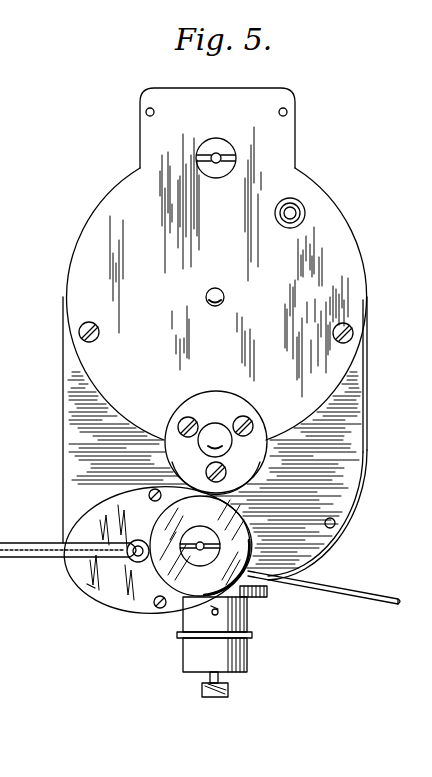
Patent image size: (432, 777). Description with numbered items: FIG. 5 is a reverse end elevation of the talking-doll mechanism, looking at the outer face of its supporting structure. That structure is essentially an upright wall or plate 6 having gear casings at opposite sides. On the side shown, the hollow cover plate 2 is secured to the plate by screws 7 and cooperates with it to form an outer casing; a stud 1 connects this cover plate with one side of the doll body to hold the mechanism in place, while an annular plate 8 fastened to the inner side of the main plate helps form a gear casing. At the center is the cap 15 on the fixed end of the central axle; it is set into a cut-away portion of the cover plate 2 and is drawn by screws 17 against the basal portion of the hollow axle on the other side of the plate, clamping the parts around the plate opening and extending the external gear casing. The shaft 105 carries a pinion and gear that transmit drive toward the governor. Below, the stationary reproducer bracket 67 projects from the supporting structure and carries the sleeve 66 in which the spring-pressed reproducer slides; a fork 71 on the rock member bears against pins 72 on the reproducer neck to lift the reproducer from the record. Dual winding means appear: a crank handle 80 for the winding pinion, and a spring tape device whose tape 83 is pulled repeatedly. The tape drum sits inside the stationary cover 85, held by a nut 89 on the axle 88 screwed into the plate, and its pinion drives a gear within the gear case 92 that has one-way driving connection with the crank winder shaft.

The stud 1 is at (302, 205).
The cover plate 2 is at (367, 378).
The wall or plate 6 is at (358, 478).
The screws 7 is at (91, 342).
The annular plate 8 is at (32, 420).
The cap 15 is at (214, 423).
The screws 17 is at (183, 417).
The sleeve 66 is at (248, 660).
The reproducer bracket 67 is at (281, 592).
The fork 71 is at (219, 612).
The pins 72 is at (213, 609).
The crank handle 80 is at (44, 562).
The tape 83 is at (378, 601).
The stationary cover 85 is at (318, 558).
The axle 88 is at (204, 544).
The nut 89 is at (188, 553).
The gear case 92 is at (87, 584).
The shaft 105 is at (215, 163).